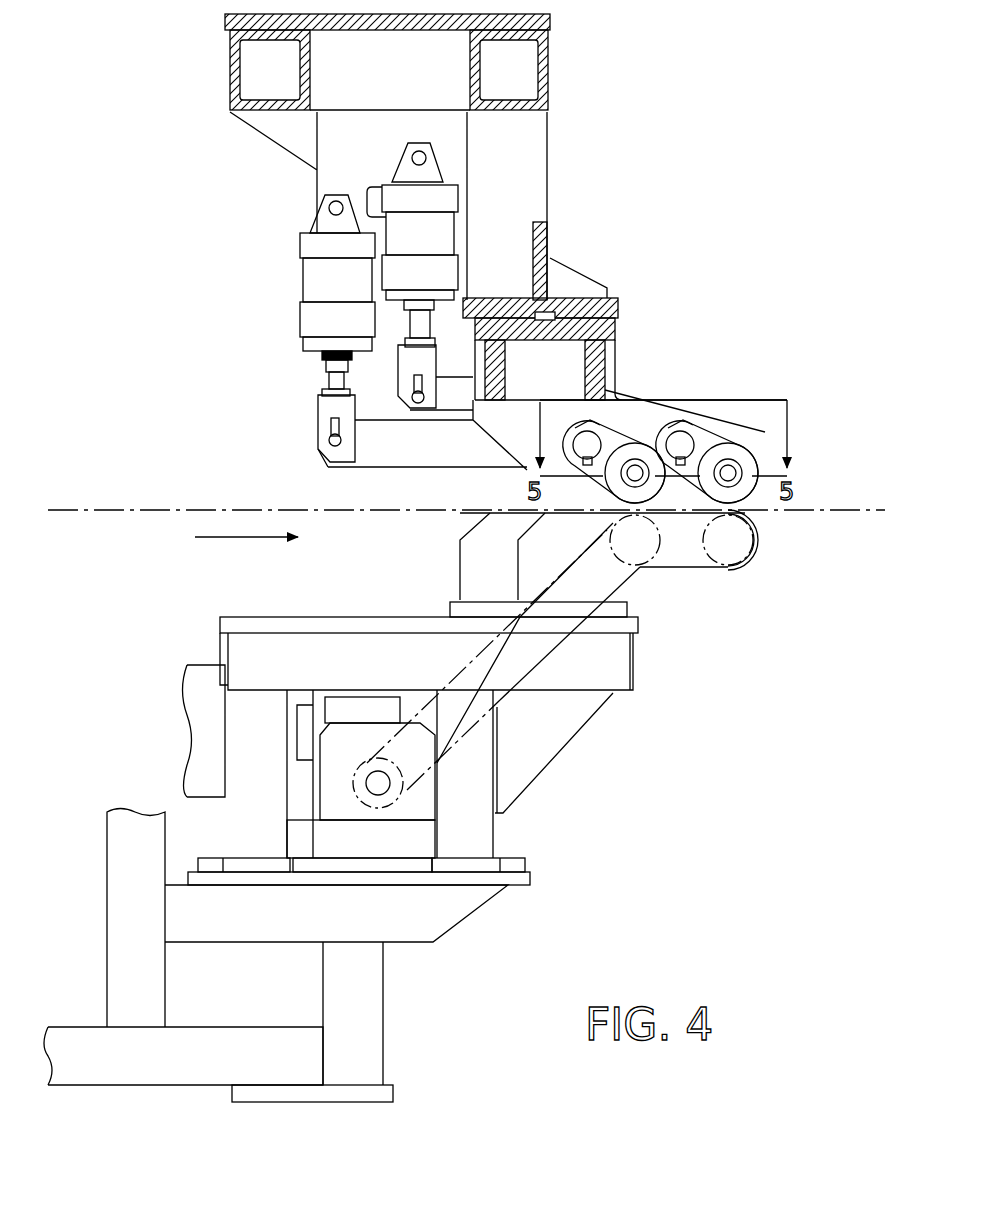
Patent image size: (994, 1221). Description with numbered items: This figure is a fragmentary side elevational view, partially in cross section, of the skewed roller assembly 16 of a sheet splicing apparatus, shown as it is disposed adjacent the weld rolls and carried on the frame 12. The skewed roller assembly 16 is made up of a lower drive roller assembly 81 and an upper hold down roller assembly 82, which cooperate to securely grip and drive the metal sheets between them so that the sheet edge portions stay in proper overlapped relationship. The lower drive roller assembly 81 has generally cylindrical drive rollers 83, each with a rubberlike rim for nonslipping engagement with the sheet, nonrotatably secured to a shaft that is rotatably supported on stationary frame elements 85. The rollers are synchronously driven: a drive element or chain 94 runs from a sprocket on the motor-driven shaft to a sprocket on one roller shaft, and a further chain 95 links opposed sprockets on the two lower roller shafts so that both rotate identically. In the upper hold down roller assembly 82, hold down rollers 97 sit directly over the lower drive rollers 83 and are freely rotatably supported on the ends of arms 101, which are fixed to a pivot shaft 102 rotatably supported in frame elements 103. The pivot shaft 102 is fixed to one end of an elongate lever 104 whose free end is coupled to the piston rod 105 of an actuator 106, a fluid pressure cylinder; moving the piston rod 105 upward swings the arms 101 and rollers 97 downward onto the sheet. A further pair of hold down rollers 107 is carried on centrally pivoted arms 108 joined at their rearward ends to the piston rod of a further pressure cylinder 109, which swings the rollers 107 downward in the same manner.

The frame 12 is at (482, 915).
The skewed roller assembly 16 is at (730, 704).
The lower drive roller assembly 81 is at (762, 572).
The upper hold down roller assembly 82 is at (768, 449).
The drive rollers 83 is at (758, 545).
The stationary frame elements 85 is at (545, 553).
The drive element or chain 94 is at (470, 662).
The chain 95 is at (686, 567).
The hold down rollers 97 is at (750, 512).
The arms 101 is at (703, 447).
The pivot shaft 102 is at (686, 445).
The frame elements 103 is at (632, 418).
The elongate lever 104 is at (458, 392).
The piston rod 105 is at (430, 355).
The actuator 106 is at (440, 232).
The hold down rollers 107 is at (622, 494).
The arms 108 is at (418, 452).
The pressure cylinder 109 is at (322, 283).